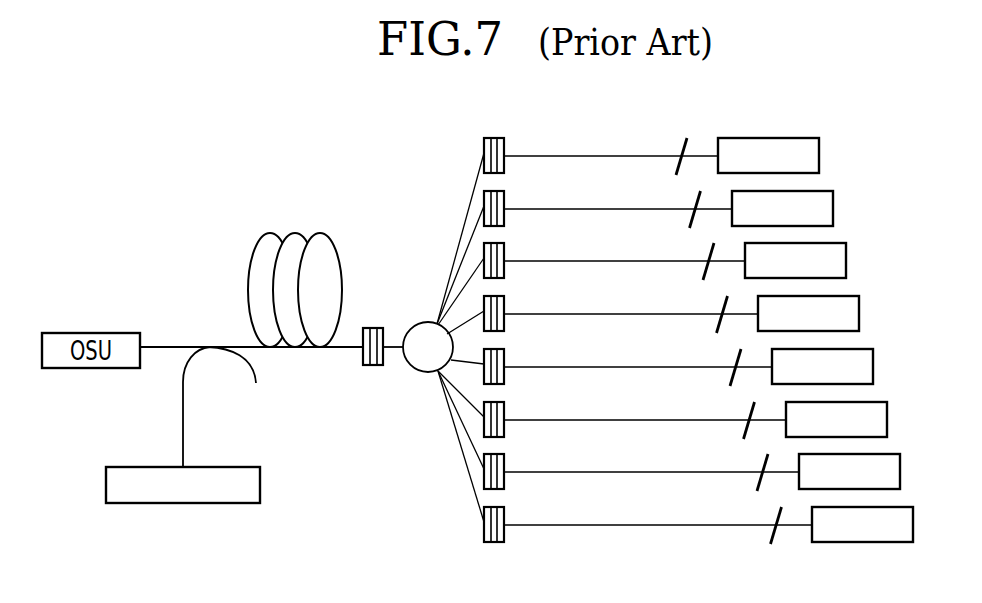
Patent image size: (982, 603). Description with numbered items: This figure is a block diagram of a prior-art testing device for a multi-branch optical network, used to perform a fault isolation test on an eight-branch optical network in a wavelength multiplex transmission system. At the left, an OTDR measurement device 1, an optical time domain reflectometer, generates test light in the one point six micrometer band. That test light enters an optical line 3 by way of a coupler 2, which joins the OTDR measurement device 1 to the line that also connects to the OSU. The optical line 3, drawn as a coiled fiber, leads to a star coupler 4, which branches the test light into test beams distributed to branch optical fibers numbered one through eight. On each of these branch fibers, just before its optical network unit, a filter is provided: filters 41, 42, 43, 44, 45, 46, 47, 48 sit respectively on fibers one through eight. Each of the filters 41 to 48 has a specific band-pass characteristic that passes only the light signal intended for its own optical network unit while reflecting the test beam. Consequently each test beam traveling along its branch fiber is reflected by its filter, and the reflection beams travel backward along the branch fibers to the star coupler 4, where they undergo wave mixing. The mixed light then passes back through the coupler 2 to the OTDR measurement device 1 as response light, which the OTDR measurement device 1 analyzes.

The OTDR measurement device 1 is at (260, 485).
The coupler 2 is at (215, 349).
The optical line 3 is at (258, 244).
The star coupler 4 is at (415, 370).
The filter 41 is at (679, 166).
The filter 42 is at (692, 219).
The filter 43 is at (706, 271).
The filter 44 is at (719, 324).
The filter 45 is at (733, 377).
The filter 46 is at (747, 430).
The filter 47 is at (760, 482).
The filter 48 is at (774, 532).